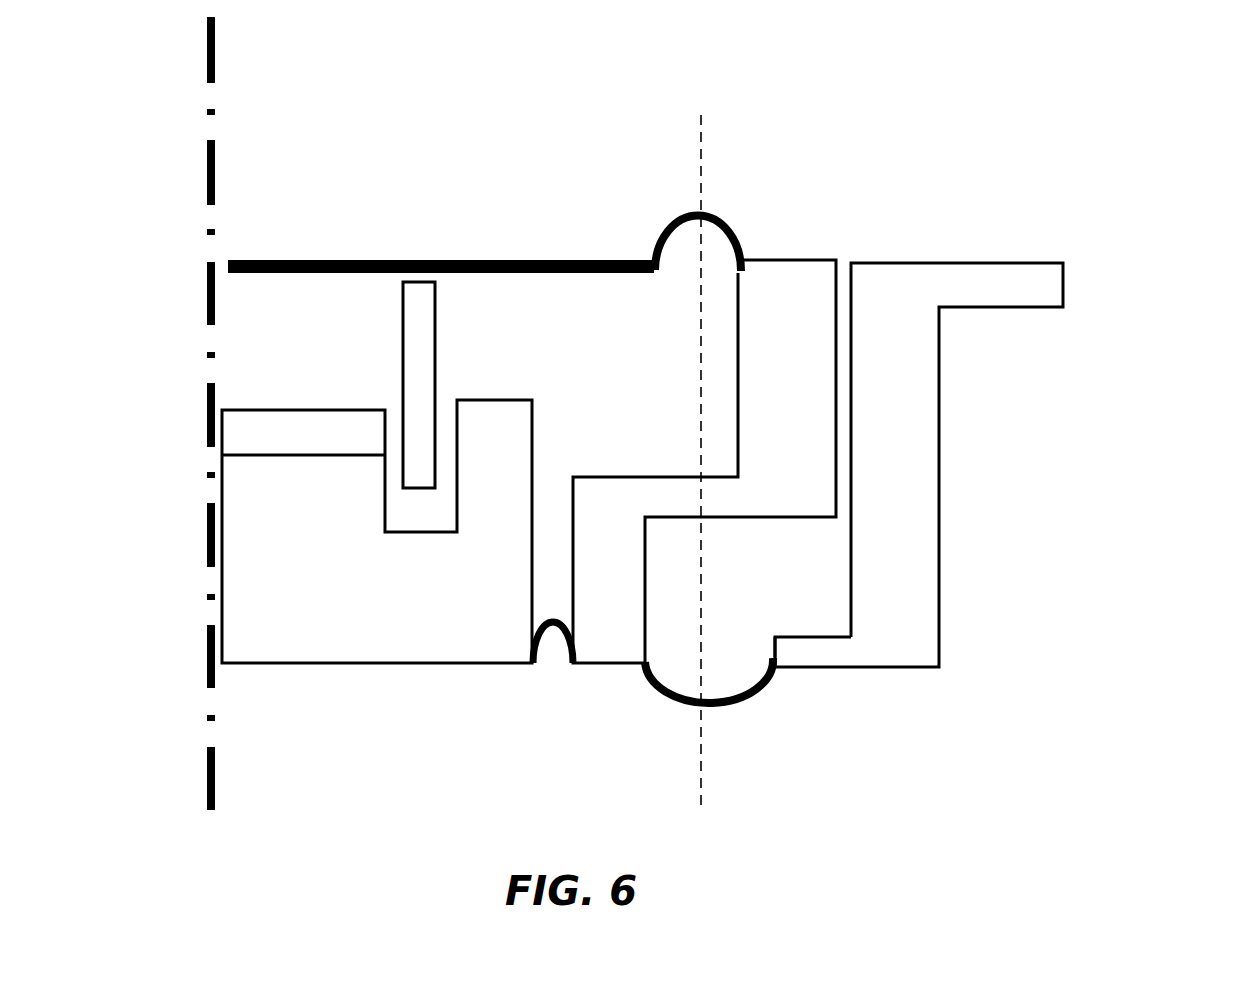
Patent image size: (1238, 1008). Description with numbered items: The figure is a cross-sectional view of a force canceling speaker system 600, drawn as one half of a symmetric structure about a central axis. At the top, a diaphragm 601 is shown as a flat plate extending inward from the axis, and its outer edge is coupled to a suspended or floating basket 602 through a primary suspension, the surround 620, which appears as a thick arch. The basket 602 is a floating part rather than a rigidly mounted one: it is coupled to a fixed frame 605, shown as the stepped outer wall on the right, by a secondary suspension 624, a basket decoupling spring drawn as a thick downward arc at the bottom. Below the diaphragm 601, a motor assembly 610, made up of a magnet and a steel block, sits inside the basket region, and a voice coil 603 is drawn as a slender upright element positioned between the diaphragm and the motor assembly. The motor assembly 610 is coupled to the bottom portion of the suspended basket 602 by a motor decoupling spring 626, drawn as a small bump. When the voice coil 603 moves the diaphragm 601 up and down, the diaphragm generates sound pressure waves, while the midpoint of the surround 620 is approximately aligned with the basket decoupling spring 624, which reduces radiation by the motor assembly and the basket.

The force canceling speaker system 600 is at (1152, 137).
The diaphragm 601 is at (515, 262).
The suspended/floating basket 602 is at (775, 297).
The voice coil 603 is at (412, 388).
The fixed frame 605 is at (903, 377).
The motor assembly 610 is at (438, 628).
The primary suspension/surround 620 is at (728, 232).
The secondary suspension (basket decoupling spring) 624 is at (742, 698).
The motor decoupling spring 626 is at (548, 635).